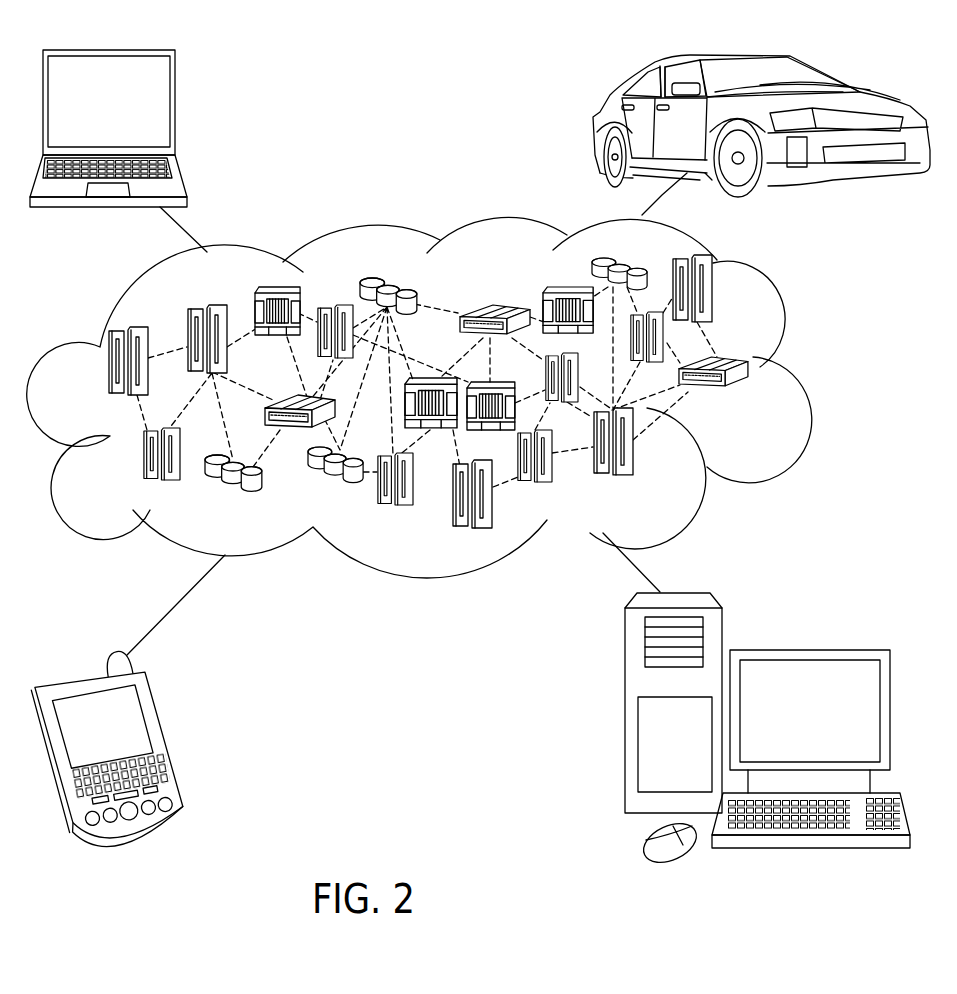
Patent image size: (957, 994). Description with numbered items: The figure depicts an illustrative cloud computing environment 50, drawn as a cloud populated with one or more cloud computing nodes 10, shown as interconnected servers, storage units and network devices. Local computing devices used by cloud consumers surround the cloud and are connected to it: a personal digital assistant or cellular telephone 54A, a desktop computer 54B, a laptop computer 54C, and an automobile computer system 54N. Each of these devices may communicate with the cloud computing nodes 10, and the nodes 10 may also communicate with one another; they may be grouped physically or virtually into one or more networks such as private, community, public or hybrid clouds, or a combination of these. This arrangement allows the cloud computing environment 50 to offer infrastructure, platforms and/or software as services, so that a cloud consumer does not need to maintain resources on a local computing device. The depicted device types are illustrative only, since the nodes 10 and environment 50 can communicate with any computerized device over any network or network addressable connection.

The cloud computing node 10 is at (743, 412).
The cloud computing environment 50 is at (807, 373).
The personal digital assistant (PDA) or cellular telephone 54A is at (167, 737).
The desktop computer 54B is at (807, 648).
The laptop computer 54C is at (175, 108).
The automobile computer system 54N is at (596, 125).